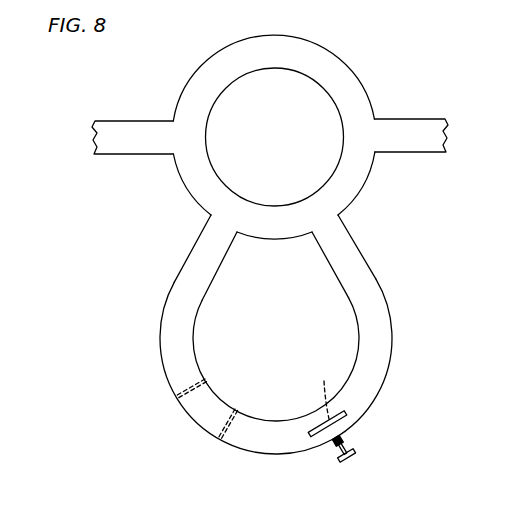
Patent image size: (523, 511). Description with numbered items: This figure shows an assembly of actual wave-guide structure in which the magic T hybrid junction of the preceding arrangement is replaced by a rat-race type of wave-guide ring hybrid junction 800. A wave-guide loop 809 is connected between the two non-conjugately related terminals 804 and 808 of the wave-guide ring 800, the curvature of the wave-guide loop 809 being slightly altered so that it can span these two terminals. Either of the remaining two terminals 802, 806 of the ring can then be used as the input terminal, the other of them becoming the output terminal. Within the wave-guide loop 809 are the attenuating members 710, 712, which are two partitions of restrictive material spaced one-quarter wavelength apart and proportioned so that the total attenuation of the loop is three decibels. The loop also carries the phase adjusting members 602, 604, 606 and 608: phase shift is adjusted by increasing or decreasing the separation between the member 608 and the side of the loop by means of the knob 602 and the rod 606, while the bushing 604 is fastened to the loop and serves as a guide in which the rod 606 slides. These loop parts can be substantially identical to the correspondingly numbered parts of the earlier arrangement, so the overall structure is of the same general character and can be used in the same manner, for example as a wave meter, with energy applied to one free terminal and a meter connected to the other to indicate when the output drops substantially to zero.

The wave-guide ring hybrid junction 800 is at (347, 65).
The terminal 802 is at (405, 152).
The terminal 806 is at (128, 154).
The non-conjugately related terminal 804 is at (352, 240).
The non-conjugately related terminal 808 is at (194, 248).
The wave-guide loop 809 is at (160, 338).
The partition of restrictive material 712 is at (182, 388).
The partition of restrictive material 710 is at (233, 422).
The member 608 is at (327, 401).
The bushing 604 is at (343, 438).
The rod 606 is at (340, 449).
The knob 602 is at (350, 457).